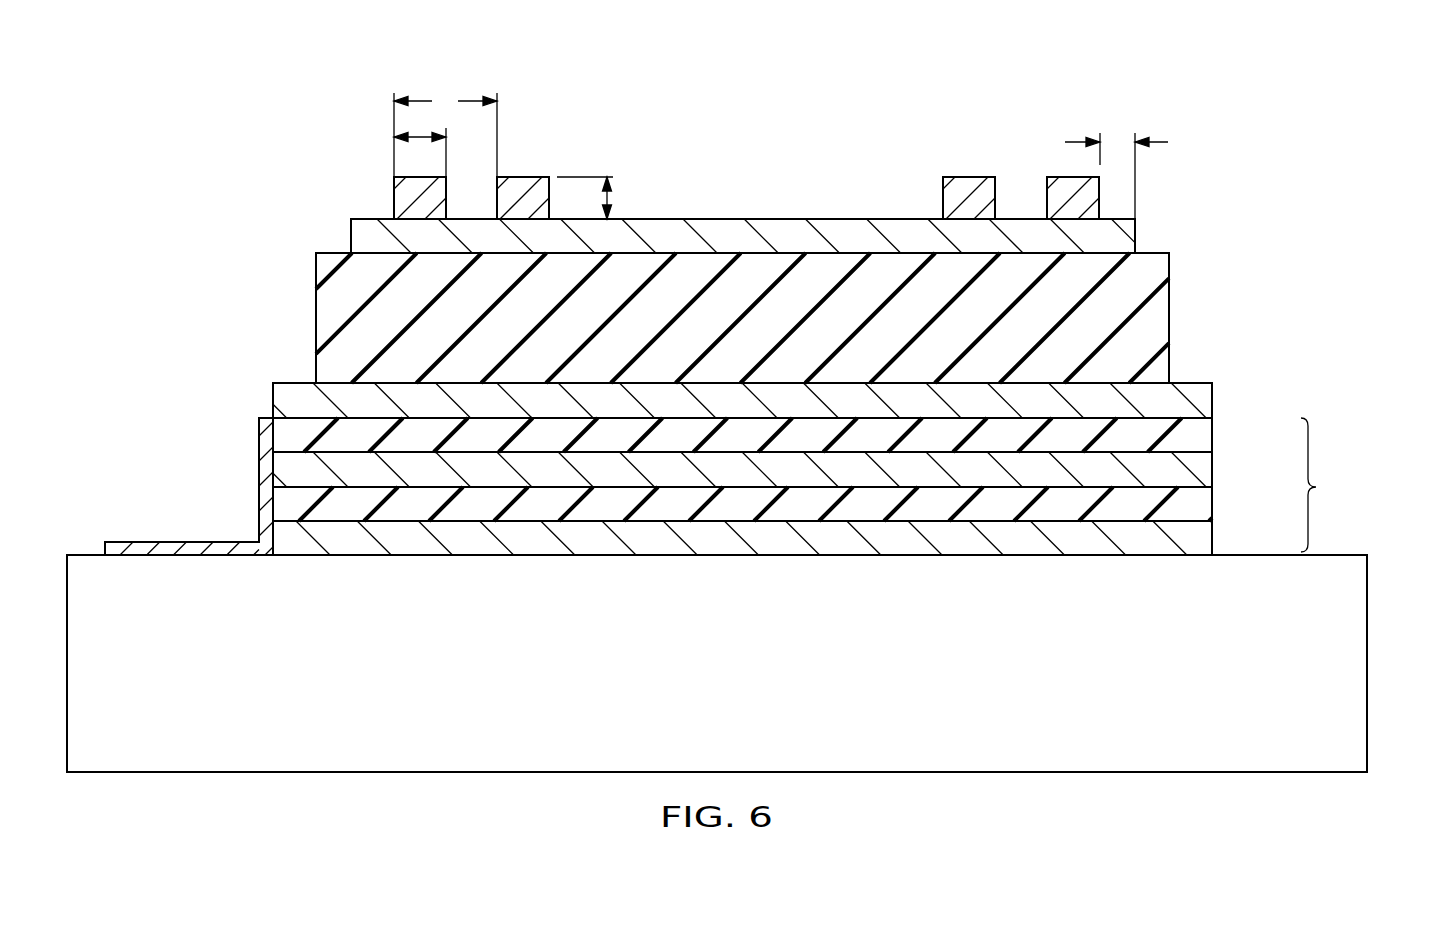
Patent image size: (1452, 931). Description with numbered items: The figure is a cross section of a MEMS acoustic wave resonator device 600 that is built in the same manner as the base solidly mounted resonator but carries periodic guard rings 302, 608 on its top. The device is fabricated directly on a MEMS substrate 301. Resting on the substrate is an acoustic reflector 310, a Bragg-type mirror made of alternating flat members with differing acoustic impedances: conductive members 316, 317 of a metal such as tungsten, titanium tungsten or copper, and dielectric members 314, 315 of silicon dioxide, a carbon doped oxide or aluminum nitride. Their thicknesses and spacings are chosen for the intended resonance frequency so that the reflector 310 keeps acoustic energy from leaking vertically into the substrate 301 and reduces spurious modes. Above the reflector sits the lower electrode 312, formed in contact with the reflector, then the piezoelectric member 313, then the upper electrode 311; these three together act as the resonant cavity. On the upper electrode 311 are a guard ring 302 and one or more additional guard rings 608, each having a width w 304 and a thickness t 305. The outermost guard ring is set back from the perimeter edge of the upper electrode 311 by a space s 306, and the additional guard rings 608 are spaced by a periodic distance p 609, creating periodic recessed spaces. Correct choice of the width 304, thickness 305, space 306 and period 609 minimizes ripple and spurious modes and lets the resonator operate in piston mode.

The MEMS acoustic wave resonator device 600 is at (240, 131).
The MEMS substrate 301 is at (1358, 664).
The guard ring 302 is at (402, 196).
The width w 304 is at (418, 136).
The thickness t 305 is at (612, 197).
The space s 306 is at (1156, 142).
The acoustic reflector 310 is at (1332, 485).
The upper electrode 311 is at (358, 237).
The lower electrode 312 is at (1200, 398).
The piezoelectric member 313 is at (325, 317).
The dielectric member 314 is at (1200, 432).
The dielectric member 315 is at (1200, 501).
The conductive member 316 is at (1200, 467).
The conductive member 317 is at (1200, 535).
The additional guard ring 608 is at (530, 185).
The periodic distance p 609 is at (421, 99).